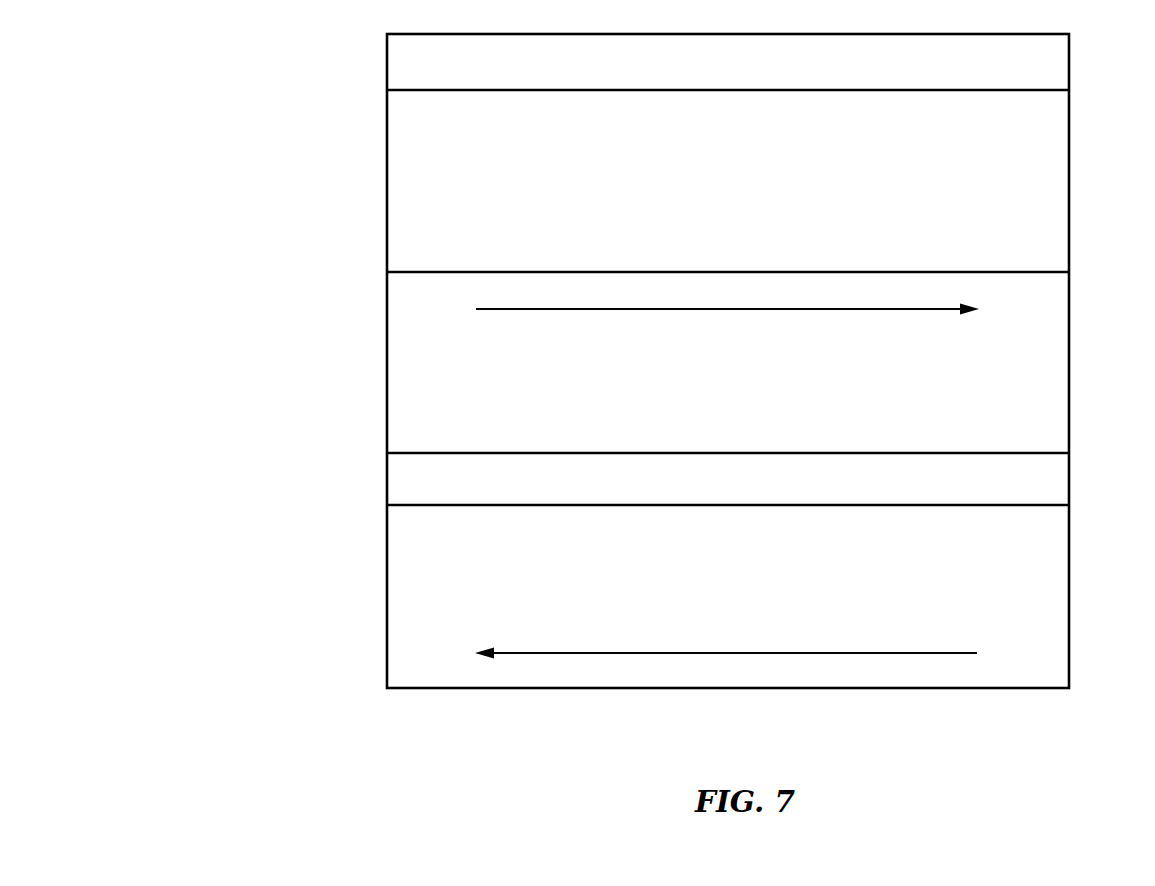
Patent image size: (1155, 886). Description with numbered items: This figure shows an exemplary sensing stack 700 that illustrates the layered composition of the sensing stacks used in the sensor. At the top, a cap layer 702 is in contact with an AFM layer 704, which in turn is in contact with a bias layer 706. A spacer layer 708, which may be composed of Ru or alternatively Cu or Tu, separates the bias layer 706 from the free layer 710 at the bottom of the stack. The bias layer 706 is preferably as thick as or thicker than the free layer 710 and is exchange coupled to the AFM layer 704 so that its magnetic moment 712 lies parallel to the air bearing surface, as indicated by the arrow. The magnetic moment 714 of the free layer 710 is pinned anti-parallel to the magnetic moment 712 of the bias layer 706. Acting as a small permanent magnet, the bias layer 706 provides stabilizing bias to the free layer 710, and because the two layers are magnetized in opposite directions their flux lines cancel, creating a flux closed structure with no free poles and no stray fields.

The sensing stack 700 is at (178, 660).
The cap layer 702 is at (1069, 53).
The AFM layer 704 is at (1069, 163).
The bias layer 706 is at (1069, 345).
The spacer layer 708 is at (1069, 473).
The free layer 710 is at (1069, 582).
The magnetic moment 712 is at (608, 310).
The magnetic moment 714 is at (869, 652).